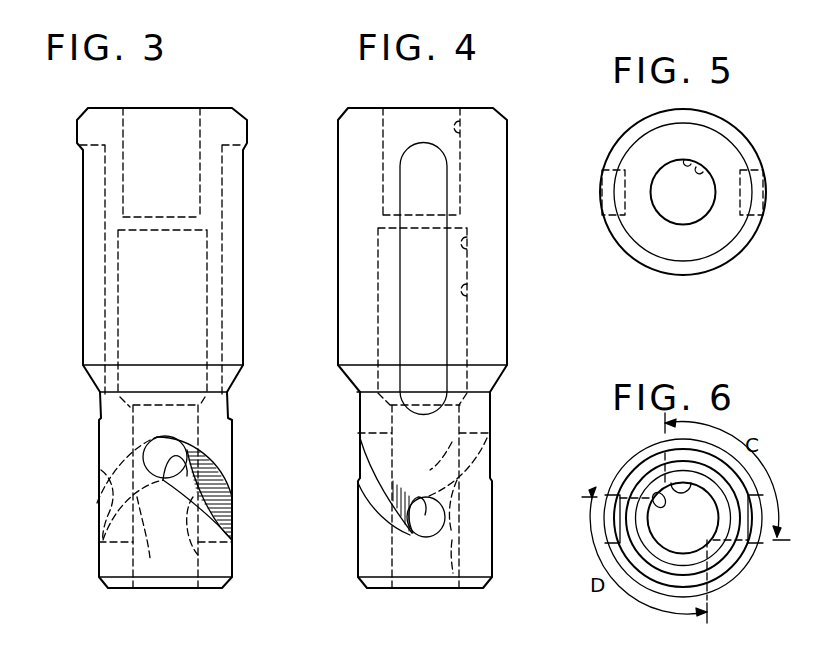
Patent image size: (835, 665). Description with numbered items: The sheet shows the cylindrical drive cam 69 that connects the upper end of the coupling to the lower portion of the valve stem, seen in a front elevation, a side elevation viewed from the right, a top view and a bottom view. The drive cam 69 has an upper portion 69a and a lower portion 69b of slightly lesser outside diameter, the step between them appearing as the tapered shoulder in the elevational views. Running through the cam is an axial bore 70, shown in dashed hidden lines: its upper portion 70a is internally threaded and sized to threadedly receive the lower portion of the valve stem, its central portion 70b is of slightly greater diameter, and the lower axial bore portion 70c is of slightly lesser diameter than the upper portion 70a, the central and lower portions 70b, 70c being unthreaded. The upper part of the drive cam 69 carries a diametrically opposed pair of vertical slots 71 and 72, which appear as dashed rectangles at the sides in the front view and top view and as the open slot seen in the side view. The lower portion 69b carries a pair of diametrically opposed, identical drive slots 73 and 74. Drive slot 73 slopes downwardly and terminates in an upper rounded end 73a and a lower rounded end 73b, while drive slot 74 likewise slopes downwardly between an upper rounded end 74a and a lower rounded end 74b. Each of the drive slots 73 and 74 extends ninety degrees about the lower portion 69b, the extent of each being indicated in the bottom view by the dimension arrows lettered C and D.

In FIG. 3, the drive cam 69 is at (82, 201).
In FIG. 4, the drive cam 69 is at (338, 234).
In FIG. 5, the drive cam 69 is at (762, 157).
In FIG. 3, the upper portion 69a is at (83, 238).
In FIG. 4, the upper portion 69a is at (338, 266).
In FIG. 5, the upper portion 69a is at (762, 233).
In FIG. 6, the upper portion 69a is at (762, 553).
In FIG. 4, the lower portion 69b is at (358, 418).
In FIG. 6, the lower portion 69b is at (723, 575).
In FIG. 3, the axial bore 70 is at (118, 258).
In FIG. 4, the axial bore 70 is at (470, 249).
In FIG. 5, the axial bore 70 is at (693, 163).
In FIG. 6, the axial bore 70 is at (668, 485).
In FIG. 3, the upper portion of the axial bore 70a is at (123, 145).
In FIG. 4, the upper portion of the axial bore 70a is at (462, 135).
In FIG. 5, the upper portion of the axial bore 70a is at (703, 170).
In FIG. 3, the central portion of the axial bore 70b is at (120, 311).
In FIG. 4, the central portion of the axial bore 70b is at (470, 293).
In FIG. 3, the lower axial bore portion 70c is at (138, 590).
In FIG. 4, the lower axial bore portion 70c is at (453, 573).
In FIG. 6, the lower axial bore portion 70c is at (655, 503).
In FIG. 3, the vertical slot 71 is at (103, 175).
In FIG. 5, the vertical slot 71 is at (602, 191).
In FIG. 6, the vertical slot 71 is at (607, 527).
In FIG. 3, the vertical slot 72 is at (243, 182).
In FIG. 4, the vertical slot 72 is at (447, 262).
In FIG. 5, the vertical slot 72 is at (763, 190).
In FIG. 6, the vertical slot 72 is at (758, 507).
In FIG. 3, the drive slot 73 is at (215, 484).
In FIG. 4, the drive slot 73 is at (375, 490).
In FIG. 3, the upper rounded end 73a is at (147, 462).
In FIG. 4, the upper rounded end 73a is at (392, 433).
In FIG. 3, the lower rounded end 73b is at (205, 557).
In FIG. 4, the lower rounded end 73b is at (440, 538).
In FIG. 3, the drive slot 74 is at (97, 504).
In FIG. 4, the drive slot 74 is at (480, 501).
In FIG. 3, the upper rounded end 74a is at (165, 480).
In FIG. 4, the upper rounded end 74a is at (445, 478).
In FIG. 3, the lower rounded end 74b is at (158, 538).
In FIG. 4, the lower rounded end 74b is at (440, 520).